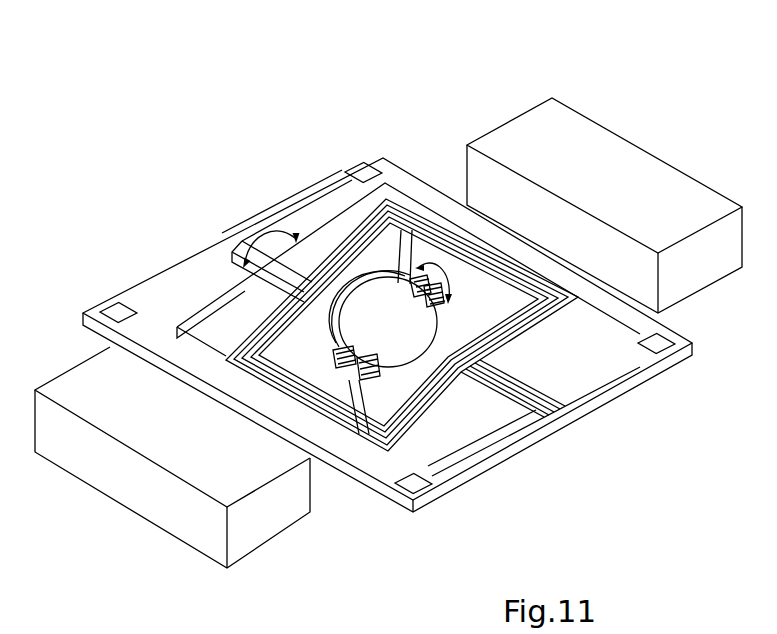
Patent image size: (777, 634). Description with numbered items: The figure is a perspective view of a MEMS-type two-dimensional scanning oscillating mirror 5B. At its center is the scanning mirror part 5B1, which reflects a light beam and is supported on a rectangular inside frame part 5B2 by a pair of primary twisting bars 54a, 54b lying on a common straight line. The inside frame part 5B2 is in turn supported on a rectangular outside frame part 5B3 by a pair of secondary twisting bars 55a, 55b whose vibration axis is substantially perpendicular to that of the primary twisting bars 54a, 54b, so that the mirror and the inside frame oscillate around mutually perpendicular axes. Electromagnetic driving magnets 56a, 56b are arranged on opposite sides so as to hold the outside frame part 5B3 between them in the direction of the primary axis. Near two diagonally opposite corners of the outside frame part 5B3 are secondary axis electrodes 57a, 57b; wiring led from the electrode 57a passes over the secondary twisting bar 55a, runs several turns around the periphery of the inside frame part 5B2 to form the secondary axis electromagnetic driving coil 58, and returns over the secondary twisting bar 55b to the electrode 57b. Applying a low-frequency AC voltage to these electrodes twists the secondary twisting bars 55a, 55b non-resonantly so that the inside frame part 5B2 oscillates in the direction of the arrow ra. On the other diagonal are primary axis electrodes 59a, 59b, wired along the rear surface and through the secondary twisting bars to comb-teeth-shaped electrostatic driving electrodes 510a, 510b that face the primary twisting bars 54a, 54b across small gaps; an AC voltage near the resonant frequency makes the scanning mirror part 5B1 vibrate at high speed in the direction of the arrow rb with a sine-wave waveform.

The oscillating mirror 5B is at (171, 244).
The scanning mirror part 5B1 is at (388, 305).
The inside frame part 5B2 is at (540, 313).
The outside frame part 5B3 is at (567, 402).
The primary twisting bar 54a is at (345, 377).
The primary twisting bar 54b is at (435, 280).
The secondary twisting bar 55a is at (268, 262).
The secondary twisting bar 55b is at (495, 402).
The electromagnetic driving magnet 56a is at (668, 195).
The electromagnetic driving magnet 56b is at (268, 505).
The secondary axis electrode 57a is at (362, 172).
The secondary axis electrode 57b is at (413, 492).
The secondary axis electromagnetic driving coil 58 is at (507, 357).
The primary axis electrode 59a is at (676, 354).
The primary axis electrode 59b is at (117, 310).
The electrostatic driving electrode 510a is at (362, 382).
The electrostatic driving electrode 510b is at (413, 280).
The arrow ra is at (278, 232).
The arrow rb is at (458, 292).